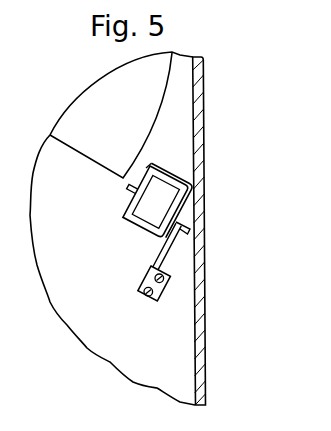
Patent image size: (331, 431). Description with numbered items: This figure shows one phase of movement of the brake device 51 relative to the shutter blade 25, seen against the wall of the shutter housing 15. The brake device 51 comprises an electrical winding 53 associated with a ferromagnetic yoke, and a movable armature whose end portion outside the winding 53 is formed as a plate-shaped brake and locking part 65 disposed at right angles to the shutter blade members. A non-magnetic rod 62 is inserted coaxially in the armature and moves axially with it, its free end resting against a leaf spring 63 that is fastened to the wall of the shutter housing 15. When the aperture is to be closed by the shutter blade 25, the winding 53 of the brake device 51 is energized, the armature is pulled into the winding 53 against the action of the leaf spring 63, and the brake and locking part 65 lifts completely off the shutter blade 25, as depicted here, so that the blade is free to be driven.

The shutter housing 15 is at (202, 325).
The shutter blade 25 is at (133, 117).
The brake device 51 is at (176, 176).
The electrical winding 53 is at (157, 215).
The non-magnetic rod 62 is at (193, 216).
The leaf spring 63 is at (168, 247).
The brake and locking part 65 is at (126, 190).